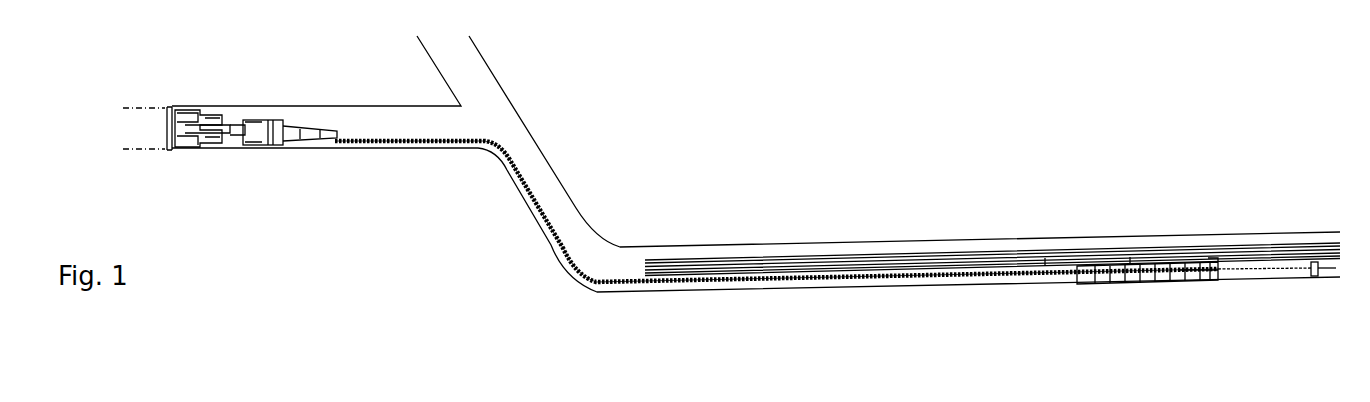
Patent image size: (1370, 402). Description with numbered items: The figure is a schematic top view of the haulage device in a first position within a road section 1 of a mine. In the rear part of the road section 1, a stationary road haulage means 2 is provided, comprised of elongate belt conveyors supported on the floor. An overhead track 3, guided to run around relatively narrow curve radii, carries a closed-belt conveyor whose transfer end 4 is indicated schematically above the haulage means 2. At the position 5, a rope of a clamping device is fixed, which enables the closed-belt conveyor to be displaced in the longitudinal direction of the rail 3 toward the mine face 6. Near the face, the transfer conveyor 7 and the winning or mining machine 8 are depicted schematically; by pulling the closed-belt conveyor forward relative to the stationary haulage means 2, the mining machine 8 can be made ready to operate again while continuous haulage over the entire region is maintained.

The road section 1 is at (535, 187).
The road haulage means 2 is at (888, 267).
The overhead track 3 is at (497, 147).
The transfer end 4 is at (1117, 280).
The position of rope fixing 5 is at (1315, 277).
The mine face 6 is at (165, 130).
The transfer conveyor 7 is at (270, 120).
The mining machine 8 is at (197, 118).